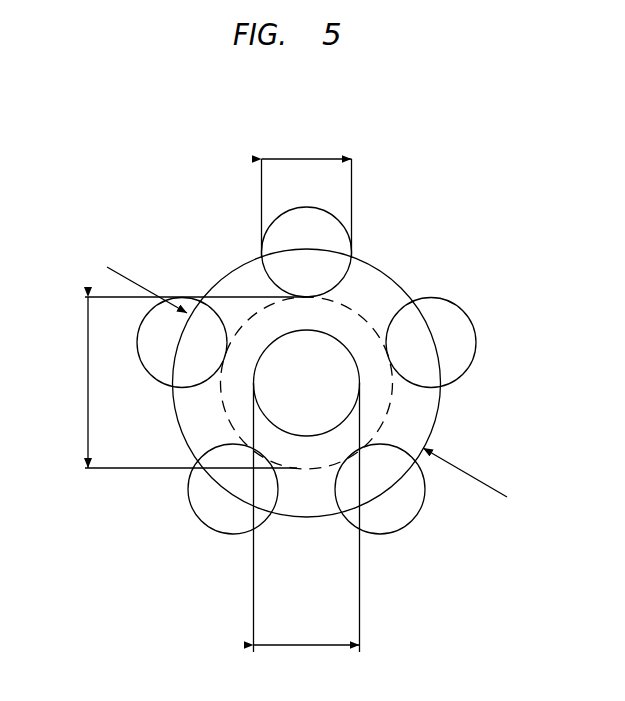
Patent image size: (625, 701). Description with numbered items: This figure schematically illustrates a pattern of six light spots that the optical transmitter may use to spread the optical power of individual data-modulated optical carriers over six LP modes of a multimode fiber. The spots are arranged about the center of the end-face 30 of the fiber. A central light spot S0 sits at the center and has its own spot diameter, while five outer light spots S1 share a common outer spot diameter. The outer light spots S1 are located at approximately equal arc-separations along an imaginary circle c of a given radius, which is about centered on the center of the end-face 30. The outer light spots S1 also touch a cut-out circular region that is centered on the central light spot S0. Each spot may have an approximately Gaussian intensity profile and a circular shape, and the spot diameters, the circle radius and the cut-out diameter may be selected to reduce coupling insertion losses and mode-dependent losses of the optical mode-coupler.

The end-face 30 is at (281, 385).
The central light spot S0 is at (307, 383).
The outer light spots S1 is at (306, 370).
The imaginary circle c is at (238, 263).